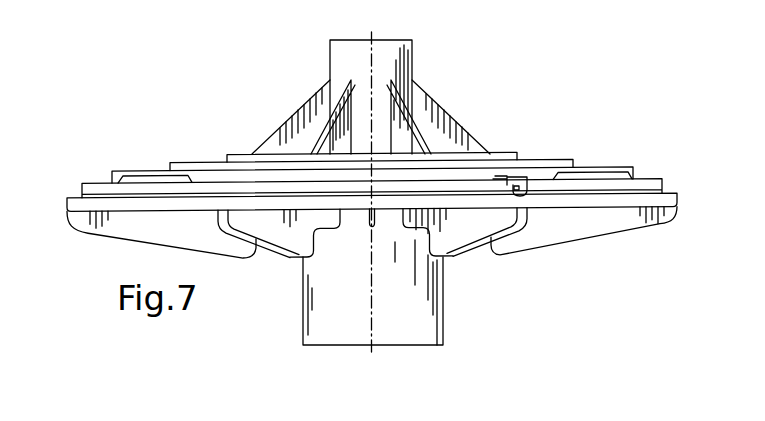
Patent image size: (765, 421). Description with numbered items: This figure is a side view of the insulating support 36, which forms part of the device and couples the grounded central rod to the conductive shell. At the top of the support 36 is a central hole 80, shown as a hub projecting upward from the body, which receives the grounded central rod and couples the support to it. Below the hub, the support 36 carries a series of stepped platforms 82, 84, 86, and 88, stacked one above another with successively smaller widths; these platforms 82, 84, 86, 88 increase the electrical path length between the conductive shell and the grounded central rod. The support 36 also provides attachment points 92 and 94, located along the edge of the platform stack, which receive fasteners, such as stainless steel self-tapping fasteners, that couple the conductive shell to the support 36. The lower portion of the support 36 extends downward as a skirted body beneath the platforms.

The insulating support 36 is at (118, 99).
The central hole 80 is at (408, 28).
The platform 82 is at (668, 178).
The platform 84 is at (652, 168).
The platform 86 is at (597, 165).
The platform 88 is at (531, 157).
The attachment point 92 is at (526, 193).
The attachment point 94 is at (66, 185).